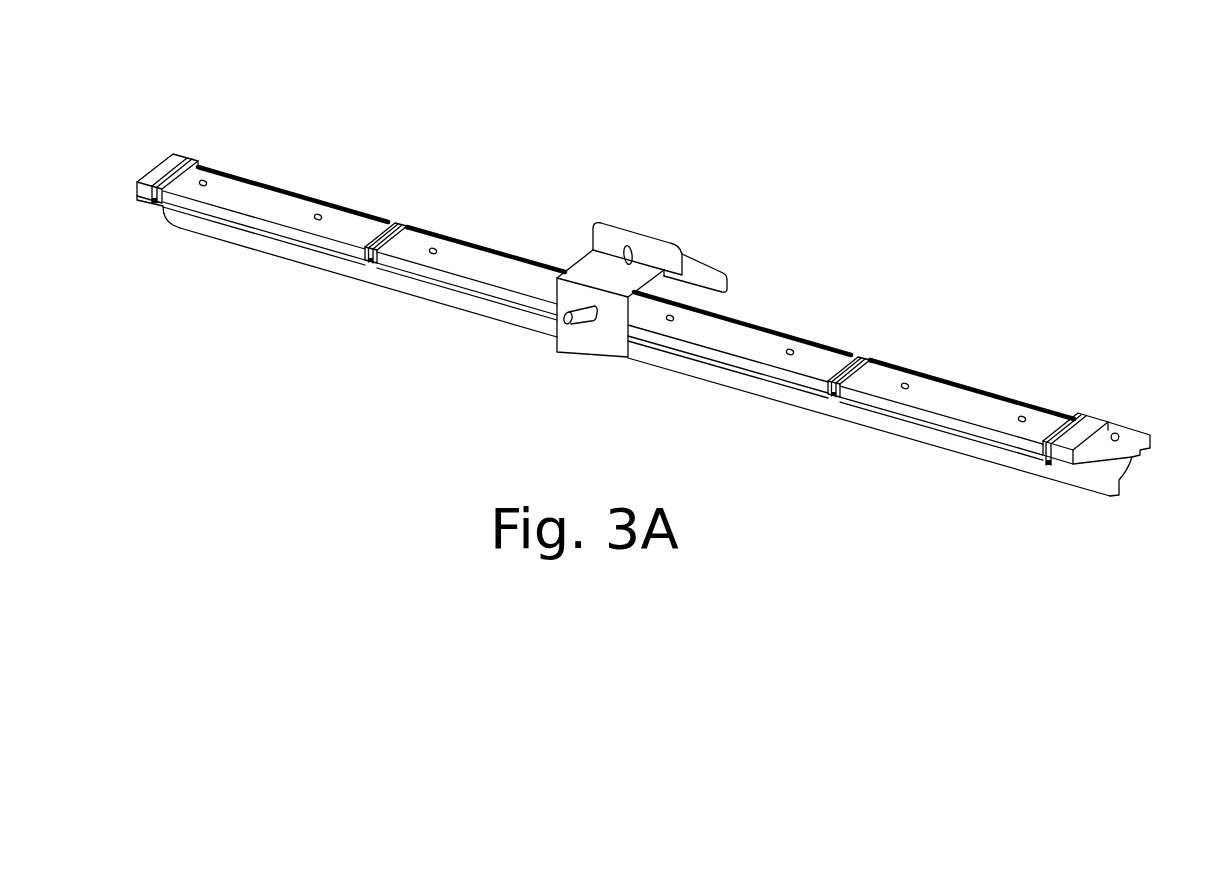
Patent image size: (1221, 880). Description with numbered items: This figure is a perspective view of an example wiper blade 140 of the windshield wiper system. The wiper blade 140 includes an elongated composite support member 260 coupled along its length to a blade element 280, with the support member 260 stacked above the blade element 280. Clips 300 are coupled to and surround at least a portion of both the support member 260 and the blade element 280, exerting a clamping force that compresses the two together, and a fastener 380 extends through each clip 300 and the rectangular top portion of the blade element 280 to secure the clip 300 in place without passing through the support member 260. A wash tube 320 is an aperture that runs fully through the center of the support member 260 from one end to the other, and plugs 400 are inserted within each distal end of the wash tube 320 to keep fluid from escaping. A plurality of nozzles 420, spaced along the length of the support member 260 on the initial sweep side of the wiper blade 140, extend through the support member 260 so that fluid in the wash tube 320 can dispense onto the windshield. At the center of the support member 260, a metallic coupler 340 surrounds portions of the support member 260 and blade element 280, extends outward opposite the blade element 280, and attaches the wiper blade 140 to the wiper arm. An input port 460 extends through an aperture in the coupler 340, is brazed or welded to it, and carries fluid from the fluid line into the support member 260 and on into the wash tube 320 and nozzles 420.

The wiper blade 140 is at (983, 131).
The support member 260 is at (267, 197).
The blade element 280 is at (317, 260).
The clip 300 is at (180, 208).
The wash tube 320 is at (1105, 452).
The coupler 340 is at (652, 254).
The fastener 380 is at (367, 262).
The plug 400 is at (1118, 442).
The nozzle 420 is at (788, 355).
The input port 460 is at (563, 326).